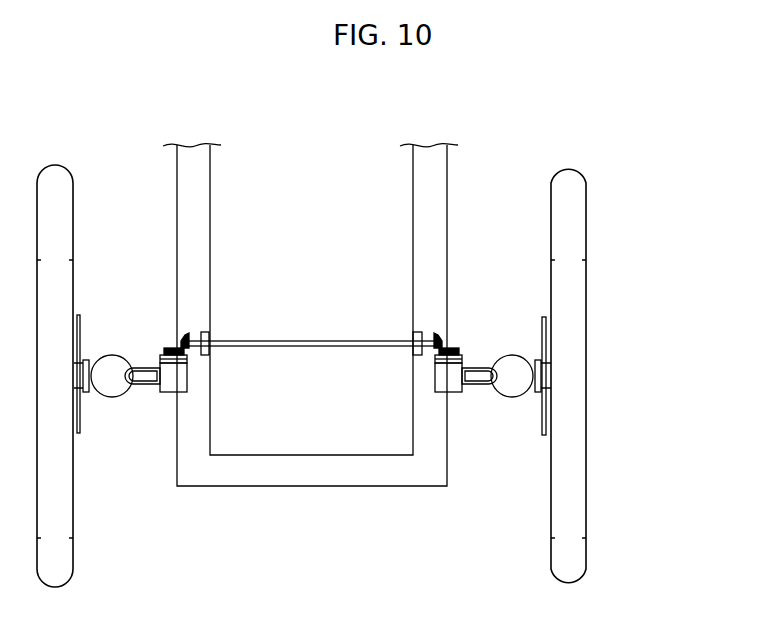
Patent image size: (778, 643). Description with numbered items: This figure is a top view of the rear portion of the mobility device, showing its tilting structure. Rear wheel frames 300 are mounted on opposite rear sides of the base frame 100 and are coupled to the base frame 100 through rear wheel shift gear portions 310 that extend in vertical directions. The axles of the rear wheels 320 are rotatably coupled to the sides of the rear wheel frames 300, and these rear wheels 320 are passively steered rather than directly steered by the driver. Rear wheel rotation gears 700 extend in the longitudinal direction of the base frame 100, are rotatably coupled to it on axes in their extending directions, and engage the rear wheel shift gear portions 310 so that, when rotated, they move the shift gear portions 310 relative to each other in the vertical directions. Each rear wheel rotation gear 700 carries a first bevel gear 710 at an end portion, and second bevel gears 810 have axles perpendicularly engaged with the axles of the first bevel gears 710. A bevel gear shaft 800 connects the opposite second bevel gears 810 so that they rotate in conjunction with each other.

The base frame 100 is at (287, 486).
The rear wheel frame 300 is at (512, 358).
The rear wheel shift gear portion 310 is at (468, 386).
The rear wheel 320 is at (578, 265).
The rear wheel rotation gear 700 is at (165, 394).
The first bevel gear 710 is at (166, 348).
The bevel gear shaft 800 is at (316, 341).
The second bevel gear 810 is at (186, 346).